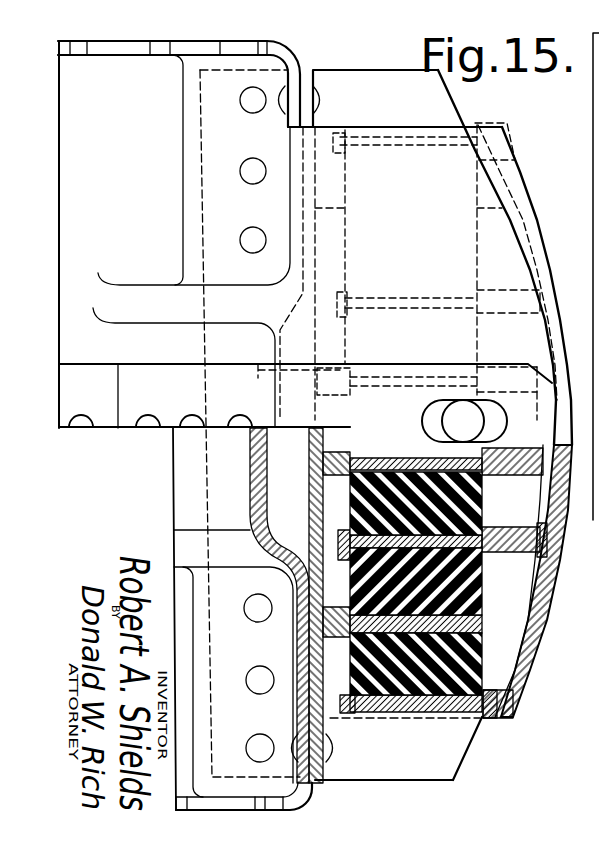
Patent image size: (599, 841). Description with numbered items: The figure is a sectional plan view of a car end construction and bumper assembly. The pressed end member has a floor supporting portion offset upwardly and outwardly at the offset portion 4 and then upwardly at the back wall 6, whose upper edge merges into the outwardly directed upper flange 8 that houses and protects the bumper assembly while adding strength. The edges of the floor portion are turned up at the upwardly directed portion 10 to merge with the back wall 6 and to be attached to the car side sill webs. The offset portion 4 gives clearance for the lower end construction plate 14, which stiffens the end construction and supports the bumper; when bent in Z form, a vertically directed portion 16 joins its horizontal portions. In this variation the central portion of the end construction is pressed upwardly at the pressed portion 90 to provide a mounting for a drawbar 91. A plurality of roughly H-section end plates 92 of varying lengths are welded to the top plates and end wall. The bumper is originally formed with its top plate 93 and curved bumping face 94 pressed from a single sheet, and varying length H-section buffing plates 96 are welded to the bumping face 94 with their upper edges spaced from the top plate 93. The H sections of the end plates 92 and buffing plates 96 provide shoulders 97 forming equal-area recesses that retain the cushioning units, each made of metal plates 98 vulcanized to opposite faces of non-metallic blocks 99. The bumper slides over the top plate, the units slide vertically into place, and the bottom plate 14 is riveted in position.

The upwardly offset portion 4 is at (207, 201).
The back wall 6 is at (289, 200).
The upper flange 8 is at (485, 193).
The upwardly directed portion 10 is at (133, 46).
The lower end construction plate 14 is at (470, 765).
The vertically directed portion 16 is at (325, 777).
The upwardly pressed central portion 90 is at (201, 545).
The drawbar 91 is at (227, 382).
The end plates 92 is at (309, 471).
The top plate 93 is at (527, 253).
The curved bumping face 94 is at (540, 615).
The buffing plates 96 is at (548, 542).
The shoulders 97 is at (350, 461).
The metal plates 98 is at (401, 470).
The non-metallic blocks 99 is at (350, 508).